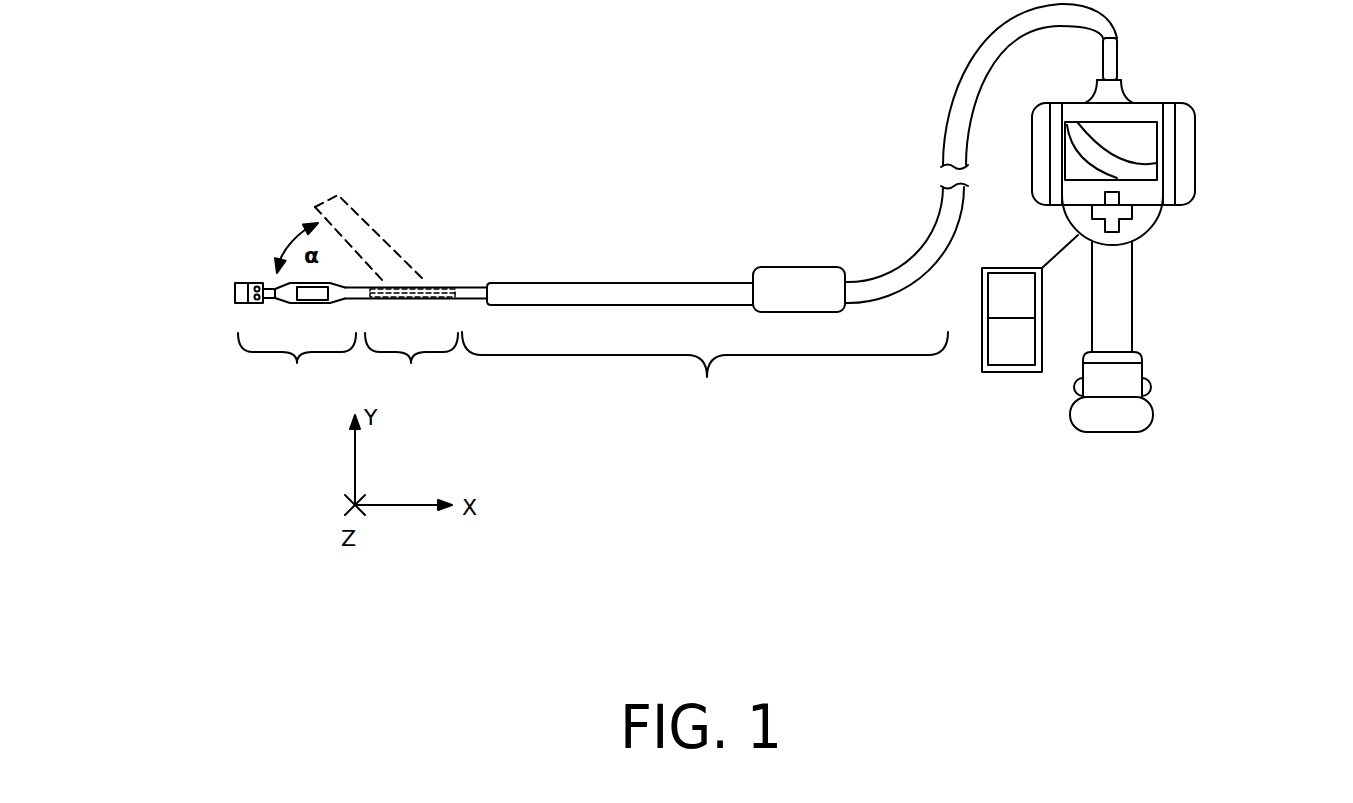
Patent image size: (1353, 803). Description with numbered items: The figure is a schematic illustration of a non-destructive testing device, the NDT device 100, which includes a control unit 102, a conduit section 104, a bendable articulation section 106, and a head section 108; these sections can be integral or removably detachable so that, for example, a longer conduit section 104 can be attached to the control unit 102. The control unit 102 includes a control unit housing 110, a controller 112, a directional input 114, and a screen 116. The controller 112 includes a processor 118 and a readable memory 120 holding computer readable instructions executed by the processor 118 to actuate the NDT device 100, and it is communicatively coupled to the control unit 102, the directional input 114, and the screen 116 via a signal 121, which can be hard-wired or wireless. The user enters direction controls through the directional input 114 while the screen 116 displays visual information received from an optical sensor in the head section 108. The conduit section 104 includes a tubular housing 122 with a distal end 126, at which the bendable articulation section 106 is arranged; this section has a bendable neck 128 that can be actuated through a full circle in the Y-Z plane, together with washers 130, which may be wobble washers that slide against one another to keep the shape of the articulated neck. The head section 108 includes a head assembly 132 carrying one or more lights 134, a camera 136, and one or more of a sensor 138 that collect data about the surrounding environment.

The NDT device 100 is at (366, 141).
The control unit 102 is at (1168, 265).
The conduit section 104 is at (705, 367).
The bendable articulation section 106 is at (411, 365).
The head section 108 is at (297, 340).
The control unit housing 110 is at (1147, 428).
The controller 112 is at (961, 324).
The directional input 114 is at (1133, 211).
The screen 116 is at (1113, 121).
The processor 118 is at (1003, 268).
The readable memory 120 is at (988, 342).
The signal 121 is at (1053, 255).
The tubular housing 122 is at (593, 283).
The distal end 126 is at (497, 283).
The bendable neck 128 is at (458, 285).
The washers 130 is at (436, 284).
The head assembly 132 is at (206, 282).
The lights 134 is at (237, 283).
The camera 136 is at (266, 288).
The sensor 138 is at (317, 292).